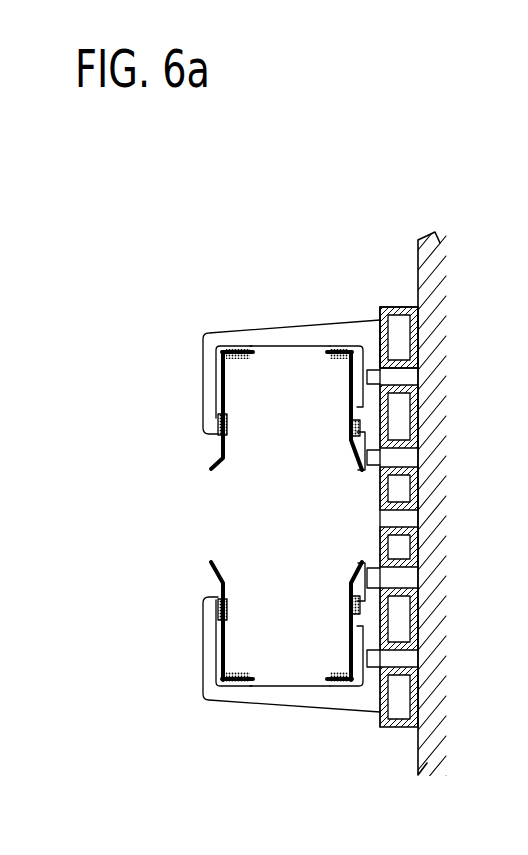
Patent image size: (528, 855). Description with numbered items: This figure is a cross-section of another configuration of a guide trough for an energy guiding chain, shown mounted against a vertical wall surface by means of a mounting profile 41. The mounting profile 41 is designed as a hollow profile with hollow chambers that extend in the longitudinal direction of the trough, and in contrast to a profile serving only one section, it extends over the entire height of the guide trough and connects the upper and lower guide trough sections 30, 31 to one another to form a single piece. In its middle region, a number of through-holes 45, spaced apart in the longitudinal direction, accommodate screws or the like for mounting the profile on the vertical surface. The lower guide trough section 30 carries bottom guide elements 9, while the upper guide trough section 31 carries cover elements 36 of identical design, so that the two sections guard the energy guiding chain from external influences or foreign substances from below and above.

The guide element 9 is at (223, 663).
The lower guide trough section 30 is at (194, 611).
The upper guide trough section 31 is at (203, 399).
The cover element 36 is at (213, 413).
The mounting profile 41 is at (399, 327).
The through-hole 45 is at (410, 518).